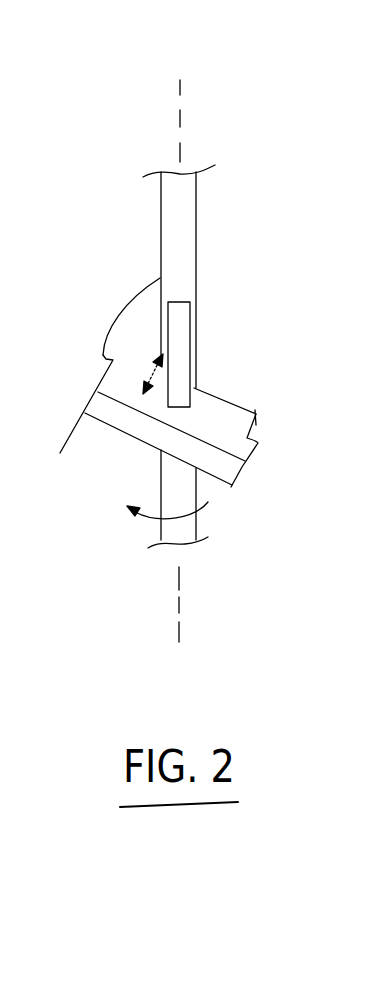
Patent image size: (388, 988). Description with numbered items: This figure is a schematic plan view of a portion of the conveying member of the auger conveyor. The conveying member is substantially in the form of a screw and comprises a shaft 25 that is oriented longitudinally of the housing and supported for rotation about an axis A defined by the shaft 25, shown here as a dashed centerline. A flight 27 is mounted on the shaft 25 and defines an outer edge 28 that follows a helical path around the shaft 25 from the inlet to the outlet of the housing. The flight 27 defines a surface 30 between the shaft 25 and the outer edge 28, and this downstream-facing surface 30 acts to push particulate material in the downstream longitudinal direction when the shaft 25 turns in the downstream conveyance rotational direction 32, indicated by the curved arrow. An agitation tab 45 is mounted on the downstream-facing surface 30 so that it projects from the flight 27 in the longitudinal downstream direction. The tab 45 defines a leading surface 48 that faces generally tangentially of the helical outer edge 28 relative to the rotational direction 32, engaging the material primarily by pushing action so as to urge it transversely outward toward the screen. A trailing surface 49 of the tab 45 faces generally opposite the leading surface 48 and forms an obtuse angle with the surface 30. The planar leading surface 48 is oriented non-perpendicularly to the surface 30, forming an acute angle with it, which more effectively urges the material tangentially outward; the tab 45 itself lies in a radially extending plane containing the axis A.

The axis A is at (182, 113).
The shaft 25 is at (196, 232).
The flight 27 is at (212, 389).
The outer edge 28 is at (122, 424).
The surface 30 is at (230, 420).
The downstream conveyance rotational direction 32 is at (147, 525).
The agitation tab 45 is at (190, 316).
The leading surface 48 is at (168, 332).
The trailing surface 49 is at (188, 350).